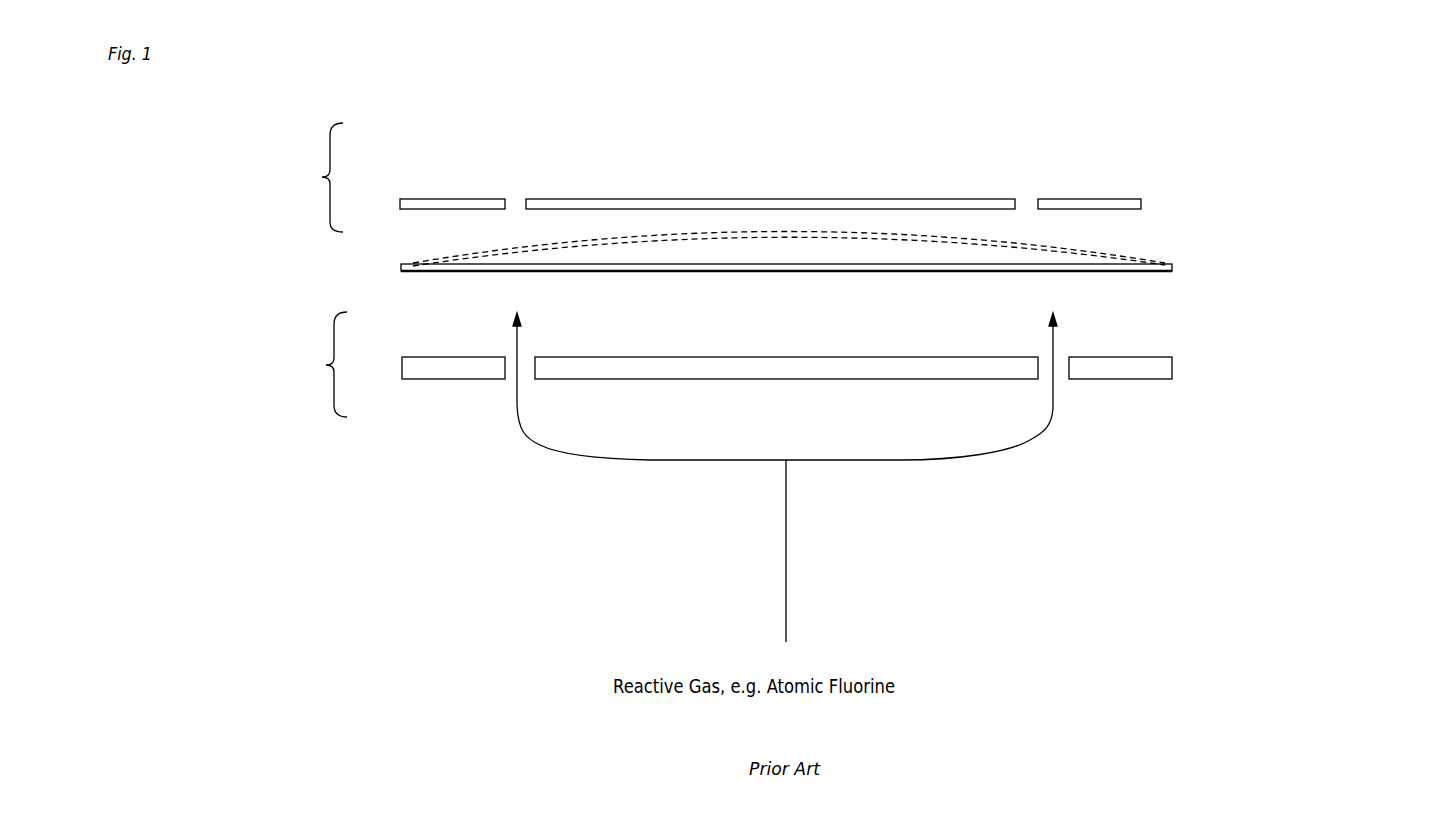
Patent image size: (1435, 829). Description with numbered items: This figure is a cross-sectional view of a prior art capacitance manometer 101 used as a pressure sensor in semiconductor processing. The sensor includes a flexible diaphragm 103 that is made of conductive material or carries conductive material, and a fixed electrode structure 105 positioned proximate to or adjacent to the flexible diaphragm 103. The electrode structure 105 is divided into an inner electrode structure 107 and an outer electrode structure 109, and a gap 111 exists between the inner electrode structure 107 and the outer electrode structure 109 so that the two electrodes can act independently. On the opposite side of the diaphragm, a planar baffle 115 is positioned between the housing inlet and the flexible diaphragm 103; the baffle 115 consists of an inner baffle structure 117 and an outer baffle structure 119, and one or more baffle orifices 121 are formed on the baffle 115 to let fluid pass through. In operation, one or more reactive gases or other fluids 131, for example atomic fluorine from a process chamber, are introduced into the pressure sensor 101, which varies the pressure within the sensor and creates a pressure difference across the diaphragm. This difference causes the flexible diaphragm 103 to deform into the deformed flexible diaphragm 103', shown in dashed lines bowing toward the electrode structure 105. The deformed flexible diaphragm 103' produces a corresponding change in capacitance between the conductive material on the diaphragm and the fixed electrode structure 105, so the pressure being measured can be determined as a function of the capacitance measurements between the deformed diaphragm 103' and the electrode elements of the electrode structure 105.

The capacitance manometer 101 is at (1323, 212).
The flexible diaphragm 103 is at (800, 253).
The deformed flexible diaphragm 103' is at (749, 253).
The fixed electrode structure 105 is at (322, 177).
The inner electrode structure 107 is at (828, 198).
The outer electrode structure 109 is at (438, 203).
The gap 111 is at (515, 203).
The baffle 115 is at (326, 365).
The inner baffle structure 117 is at (973, 357).
The outer baffle structure 119 is at (445, 380).
The baffle orifices 121 is at (510, 376).
The reactive gases or other fluids 131 is at (788, 592).